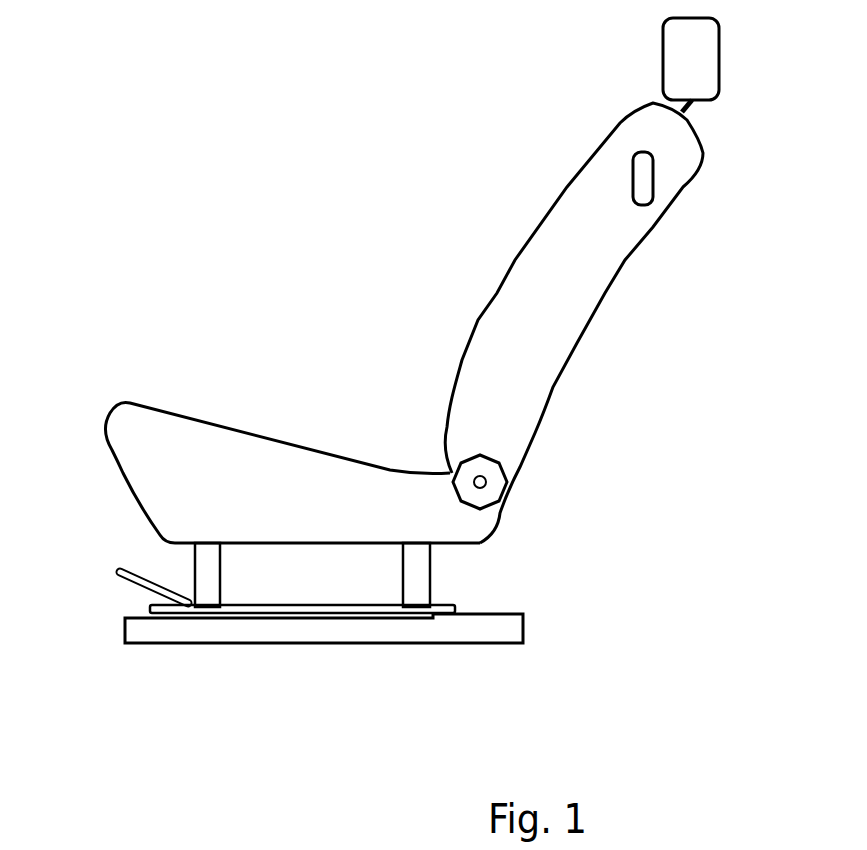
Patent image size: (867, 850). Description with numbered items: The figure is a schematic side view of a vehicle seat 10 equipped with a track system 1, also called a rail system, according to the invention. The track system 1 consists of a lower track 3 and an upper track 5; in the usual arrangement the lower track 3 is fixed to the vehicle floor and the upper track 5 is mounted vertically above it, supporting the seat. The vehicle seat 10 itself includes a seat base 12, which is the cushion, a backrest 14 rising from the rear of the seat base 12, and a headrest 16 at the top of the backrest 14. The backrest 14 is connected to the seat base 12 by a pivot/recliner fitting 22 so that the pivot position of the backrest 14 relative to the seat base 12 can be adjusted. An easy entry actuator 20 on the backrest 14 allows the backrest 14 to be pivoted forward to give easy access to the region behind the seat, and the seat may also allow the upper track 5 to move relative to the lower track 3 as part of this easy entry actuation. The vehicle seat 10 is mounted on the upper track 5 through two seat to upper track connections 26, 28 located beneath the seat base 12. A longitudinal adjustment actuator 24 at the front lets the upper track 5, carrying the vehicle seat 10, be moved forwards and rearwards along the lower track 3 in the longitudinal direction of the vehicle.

The track system 1 is at (500, 597).
The lower track 3 is at (145, 633).
The upper track 5 is at (153, 612).
The vehicle seat 10 is at (213, 195).
The seat base 12 is at (190, 457).
The backrest 14 is at (600, 245).
The headrest 16 is at (707, 45).
The easy entry actuator 20 is at (647, 183).
The pivot/recliner fitting 22 is at (492, 478).
The longitudinal adjustment actuator 24 is at (120, 572).
The seat to upper track connection 26 is at (417, 580).
The seat to upper track connection 28 is at (202, 572).